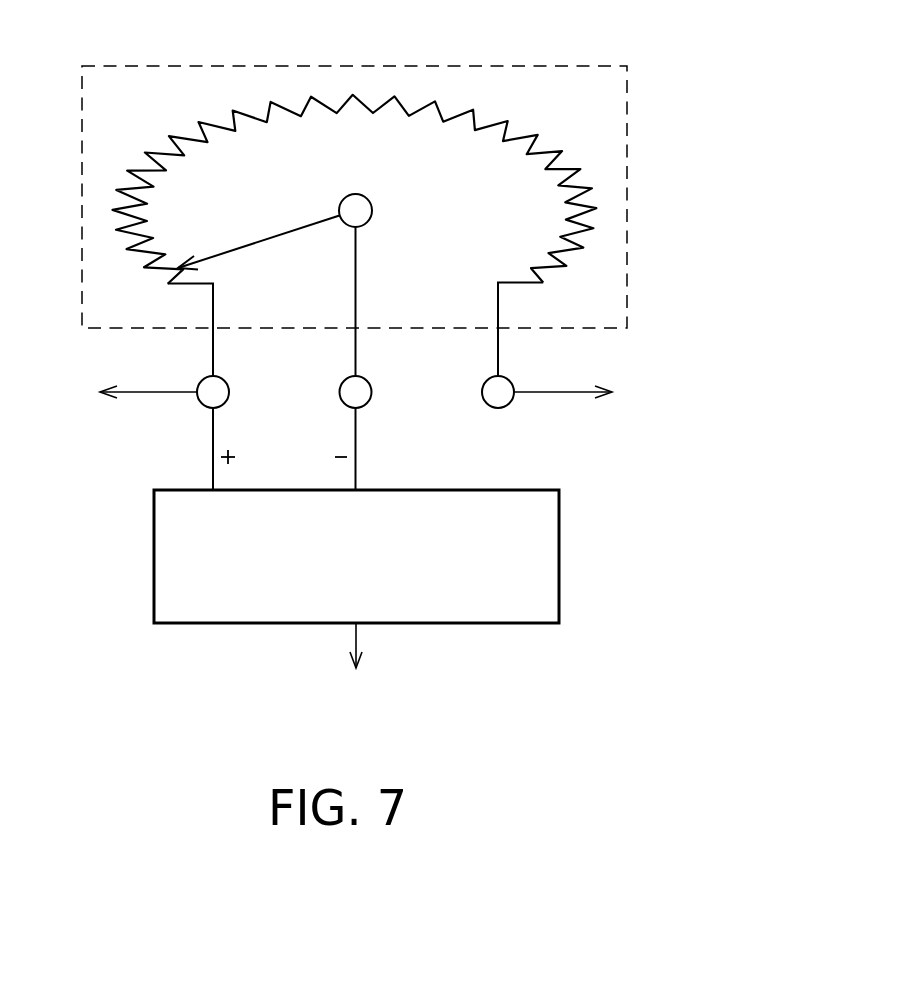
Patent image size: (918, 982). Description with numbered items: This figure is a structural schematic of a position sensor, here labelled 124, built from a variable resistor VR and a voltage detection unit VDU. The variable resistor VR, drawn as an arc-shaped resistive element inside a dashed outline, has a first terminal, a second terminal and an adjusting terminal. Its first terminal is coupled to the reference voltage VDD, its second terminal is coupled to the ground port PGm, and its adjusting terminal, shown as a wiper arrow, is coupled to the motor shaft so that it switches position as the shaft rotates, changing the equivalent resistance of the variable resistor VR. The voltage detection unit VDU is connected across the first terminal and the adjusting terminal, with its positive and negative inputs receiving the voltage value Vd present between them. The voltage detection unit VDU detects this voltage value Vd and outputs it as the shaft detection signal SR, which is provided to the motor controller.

The voltage regulation / resistance adjusting circuit 124 is at (362, 363).
The variable resistor VR is at (537, 66).
The voltage detection unit VDU is at (559, 555).
The reference voltage VDD is at (137, 392).
The ground port PGm is at (575, 392).
The voltage value Vd is at (292, 433).
The shaft detection signal SR is at (357, 665).